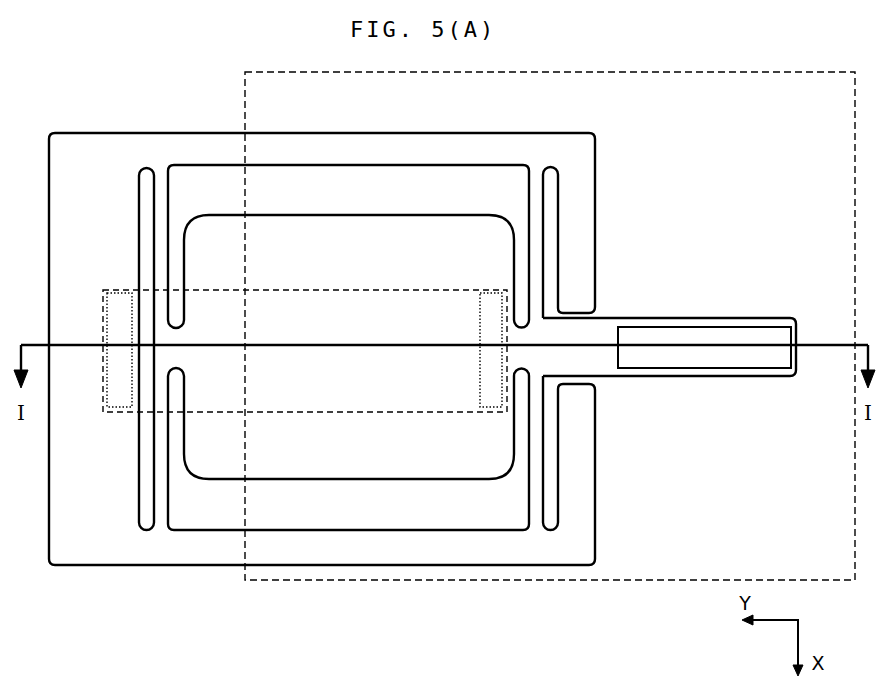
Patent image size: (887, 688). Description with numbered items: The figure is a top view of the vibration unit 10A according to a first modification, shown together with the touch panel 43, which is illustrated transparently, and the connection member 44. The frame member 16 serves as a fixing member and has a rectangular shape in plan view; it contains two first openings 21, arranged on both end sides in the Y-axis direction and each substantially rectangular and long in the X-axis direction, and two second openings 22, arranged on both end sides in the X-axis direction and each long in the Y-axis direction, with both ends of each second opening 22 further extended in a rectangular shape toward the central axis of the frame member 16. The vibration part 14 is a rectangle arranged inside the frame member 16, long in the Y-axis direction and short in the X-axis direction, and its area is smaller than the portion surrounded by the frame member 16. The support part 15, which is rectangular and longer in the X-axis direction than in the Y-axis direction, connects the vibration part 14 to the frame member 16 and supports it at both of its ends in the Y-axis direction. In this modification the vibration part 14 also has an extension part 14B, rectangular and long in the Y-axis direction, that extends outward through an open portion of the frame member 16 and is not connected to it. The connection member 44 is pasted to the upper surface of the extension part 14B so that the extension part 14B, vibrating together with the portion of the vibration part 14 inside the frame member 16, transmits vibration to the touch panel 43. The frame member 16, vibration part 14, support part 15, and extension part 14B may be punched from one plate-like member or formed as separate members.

The vibration unit 10A is at (70, 105).
The vibration part 14 is at (430, 479).
The extension part 14B is at (696, 377).
The support part 15 is at (545, 228).
The frame member 16 is at (310, 547).
The first opening 21 is at (147, 167).
The second opening 22 is at (462, 185).
The touch panel 43 is at (638, 580).
The connection member 44 is at (723, 330).